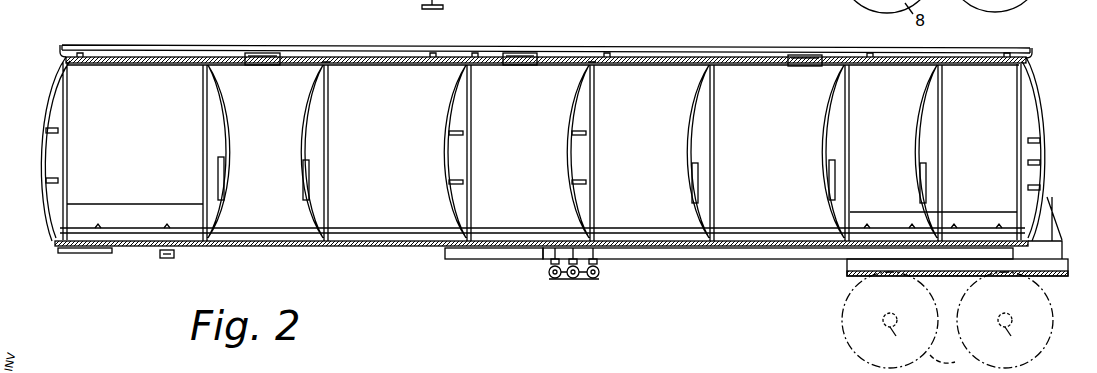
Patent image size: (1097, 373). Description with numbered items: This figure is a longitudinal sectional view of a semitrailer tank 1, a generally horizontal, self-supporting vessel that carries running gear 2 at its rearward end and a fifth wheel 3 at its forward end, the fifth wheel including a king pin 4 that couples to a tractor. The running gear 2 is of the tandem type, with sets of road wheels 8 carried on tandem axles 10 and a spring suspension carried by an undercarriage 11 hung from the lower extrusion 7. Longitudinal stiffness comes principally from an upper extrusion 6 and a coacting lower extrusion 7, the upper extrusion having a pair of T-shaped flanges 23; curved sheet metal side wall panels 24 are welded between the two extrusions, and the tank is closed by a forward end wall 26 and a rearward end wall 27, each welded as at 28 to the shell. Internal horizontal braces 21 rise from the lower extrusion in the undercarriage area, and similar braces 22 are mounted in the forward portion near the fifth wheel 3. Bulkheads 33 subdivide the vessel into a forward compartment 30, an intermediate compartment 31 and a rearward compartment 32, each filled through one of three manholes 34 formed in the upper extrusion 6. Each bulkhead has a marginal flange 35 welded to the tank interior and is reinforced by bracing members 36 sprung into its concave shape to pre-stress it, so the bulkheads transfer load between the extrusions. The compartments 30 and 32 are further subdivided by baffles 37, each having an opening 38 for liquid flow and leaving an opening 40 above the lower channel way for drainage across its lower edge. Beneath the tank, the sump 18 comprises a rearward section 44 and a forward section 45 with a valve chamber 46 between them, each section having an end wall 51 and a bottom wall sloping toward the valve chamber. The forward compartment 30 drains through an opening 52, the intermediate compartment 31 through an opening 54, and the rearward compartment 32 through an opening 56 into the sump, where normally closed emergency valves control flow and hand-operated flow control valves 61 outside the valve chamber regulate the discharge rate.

The tank 1 is at (642, 60).
The running gear 2 is at (852, 340).
The fifth wheel 3 is at (145, 253).
The king pin 4 is at (170, 258).
The upper extrusion 6 is at (523, 44).
The lower extrusion 7 is at (305, 249).
The road wheels 8 is at (942, 364).
The tandem axles 10 is at (957, 332).
The undercarriage 11 is at (865, 270).
The sump 18 is at (735, 262).
The internal horizontal braces 21 is at (972, 220).
The internal horizontal braces 22 is at (130, 220).
The flanges 23 is at (185, 45).
The side wall panels 24 is at (282, 144).
The forward end wall 26 is at (44, 103).
The rearward end wall 27 is at (1040, 100).
The weld 28 is at (58, 52).
The forward compartment 30 is at (375, 95).
The intermediate compartment 31 is at (563, 85).
The rearward compartment 32 is at (757, 95).
The bulkheads 33 is at (446, 108).
The manholes 34 is at (262, 53).
The marginal flange 35 is at (328, 62).
The bracing members 36 is at (473, 157).
The baffles 37 is at (228, 118).
The opening 38 is at (330, 177).
The opening 40 is at (715, 238).
The rearward sump section 44 is at (775, 259).
The forward sump section 45 is at (482, 262).
The valve chamber 46 is at (601, 256).
The end wall 51 is at (445, 253).
The opening 52 is at (458, 240).
The opening 54 is at (578, 240).
The opening 56 is at (1020, 243).
The flow control valves 61 is at (552, 265).